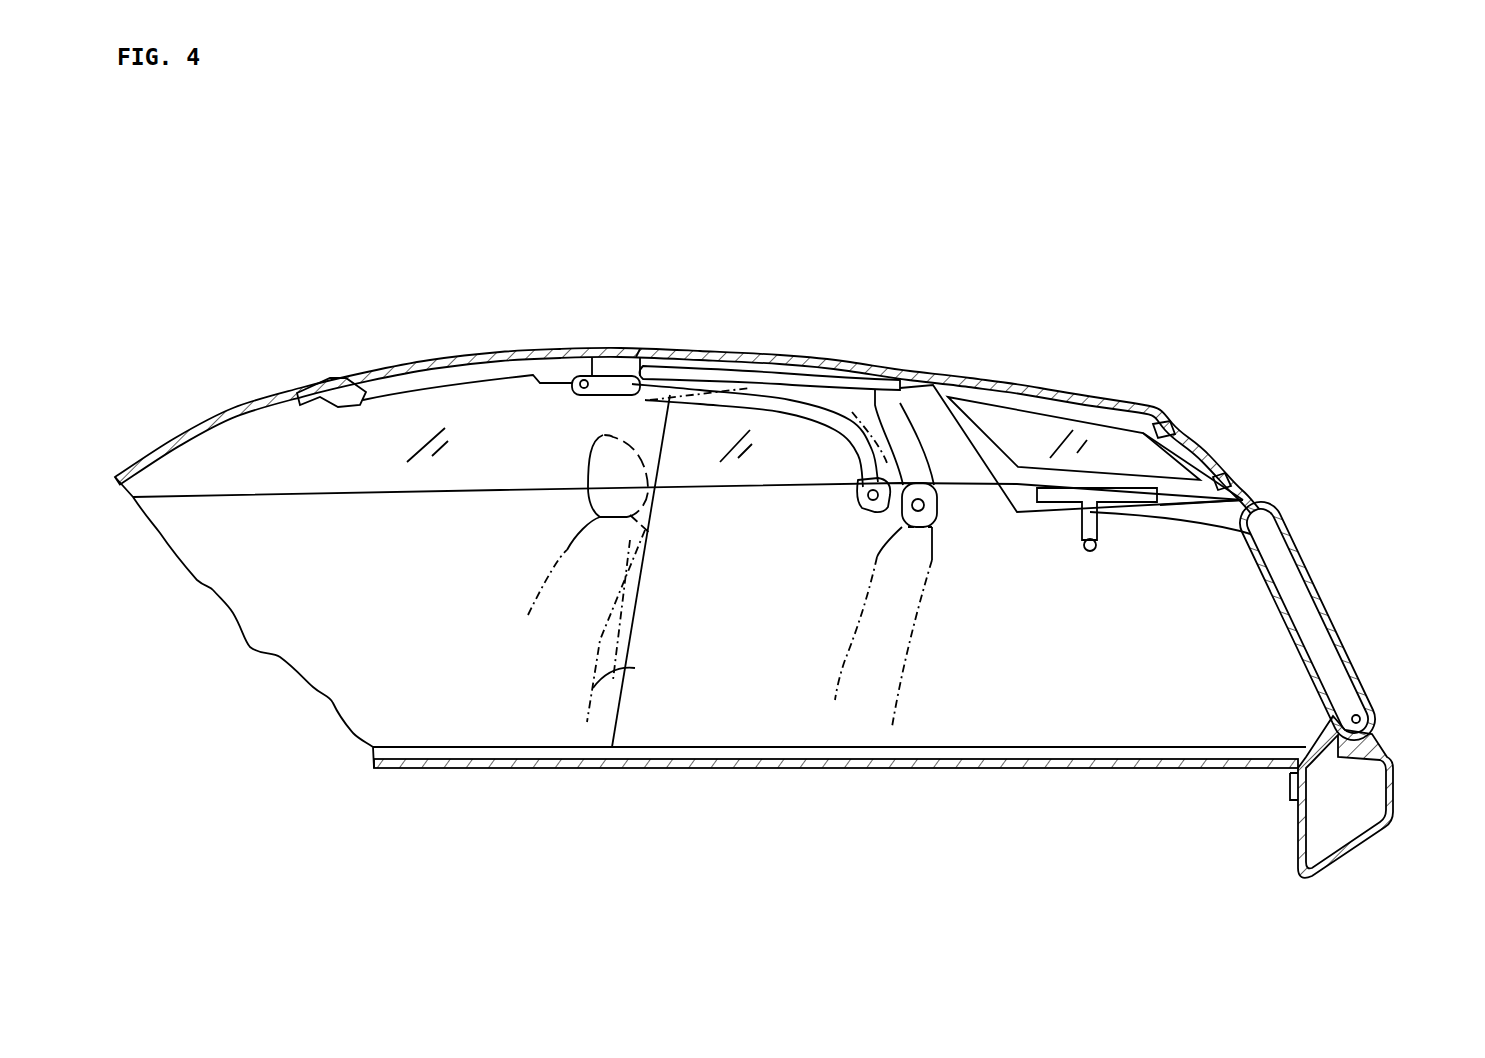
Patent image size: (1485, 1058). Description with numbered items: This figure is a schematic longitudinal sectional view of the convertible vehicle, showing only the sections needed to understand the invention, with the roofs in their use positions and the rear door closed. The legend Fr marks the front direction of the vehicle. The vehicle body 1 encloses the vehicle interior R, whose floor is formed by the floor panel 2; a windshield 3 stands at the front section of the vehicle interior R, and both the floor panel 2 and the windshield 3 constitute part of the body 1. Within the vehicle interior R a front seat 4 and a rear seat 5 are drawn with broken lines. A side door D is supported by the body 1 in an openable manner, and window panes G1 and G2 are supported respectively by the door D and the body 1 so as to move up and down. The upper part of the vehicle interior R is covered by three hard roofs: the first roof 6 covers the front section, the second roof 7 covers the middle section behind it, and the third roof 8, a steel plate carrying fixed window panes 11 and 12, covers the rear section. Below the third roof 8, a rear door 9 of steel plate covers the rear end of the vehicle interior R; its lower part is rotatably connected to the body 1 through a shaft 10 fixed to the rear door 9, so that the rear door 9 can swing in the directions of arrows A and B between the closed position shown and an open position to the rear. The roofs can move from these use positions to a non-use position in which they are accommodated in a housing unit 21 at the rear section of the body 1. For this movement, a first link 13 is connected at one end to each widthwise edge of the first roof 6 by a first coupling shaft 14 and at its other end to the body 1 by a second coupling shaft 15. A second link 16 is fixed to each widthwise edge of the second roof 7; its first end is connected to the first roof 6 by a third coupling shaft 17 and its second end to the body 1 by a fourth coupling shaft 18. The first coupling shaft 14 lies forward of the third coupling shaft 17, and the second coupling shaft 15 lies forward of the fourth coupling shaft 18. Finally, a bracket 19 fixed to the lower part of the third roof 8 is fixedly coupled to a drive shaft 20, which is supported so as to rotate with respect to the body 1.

The vehicle body 1 is at (574, 770).
The floor panel 2 is at (845, 770).
The windshield 3 is at (230, 412).
The front seat 4 is at (633, 667).
The rear seat 5 is at (845, 663).
The first roof 6 is at (520, 350).
The second roof 7 is at (742, 350).
The third roof 8 is at (1073, 390).
The rear door 9 is at (1318, 584).
The shaft 10 is at (1368, 702).
The window pane 11 is at (1117, 443).
The window pane 12 is at (1176, 480).
The first link 13 is at (783, 414).
The first coupling shaft 14 is at (596, 376).
The second coupling shaft 15 is at (866, 504).
The second link 16 is at (918, 395).
The third coupling shaft 17 is at (638, 386).
The fourth coupling shaft 18 is at (937, 522).
The bracket 19 is at (1127, 502).
The drive shaft 20 is at (1088, 552).
The housing unit 21 is at (1134, 711).
The window pane G1 is at (292, 462).
The window pane G2 is at (700, 460).
The vehicle interior R is at (400, 601).
The side door D is at (420, 712).
The arrow A is at (1305, 527).
The arrow B is at (1378, 503).
The front direction Fr is at (135, 623).